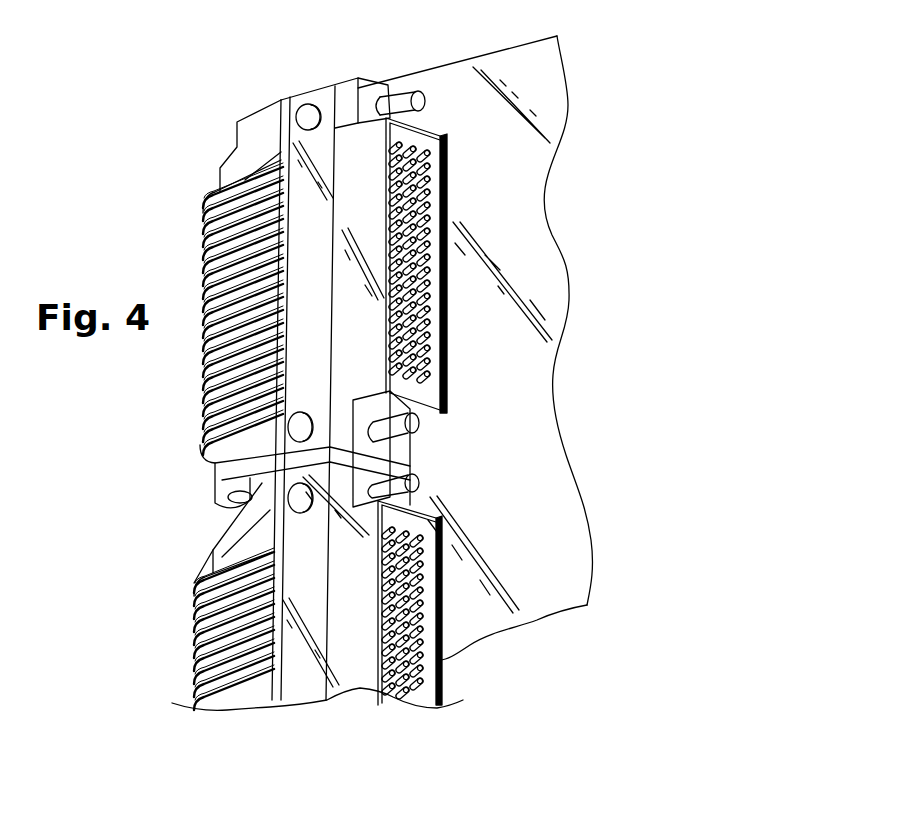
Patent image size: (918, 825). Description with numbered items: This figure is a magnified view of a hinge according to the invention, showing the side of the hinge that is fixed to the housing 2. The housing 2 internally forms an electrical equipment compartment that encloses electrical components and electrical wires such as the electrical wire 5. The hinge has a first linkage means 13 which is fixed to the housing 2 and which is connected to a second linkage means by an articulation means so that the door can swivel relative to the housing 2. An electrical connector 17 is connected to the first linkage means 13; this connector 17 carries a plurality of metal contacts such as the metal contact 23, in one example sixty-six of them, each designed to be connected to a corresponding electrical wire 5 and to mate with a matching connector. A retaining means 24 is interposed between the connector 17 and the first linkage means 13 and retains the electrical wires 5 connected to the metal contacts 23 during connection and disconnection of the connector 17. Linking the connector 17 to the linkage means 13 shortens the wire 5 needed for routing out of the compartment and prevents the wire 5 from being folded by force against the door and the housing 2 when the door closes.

The housing 2 is at (450, 97).
The electrical wire 5 is at (233, 208).
The first linkage means 13 is at (250, 155).
The electrical connector 17 is at (376, 95).
The metal contact 23 is at (430, 199).
The retaining means 24 is at (323, 97).